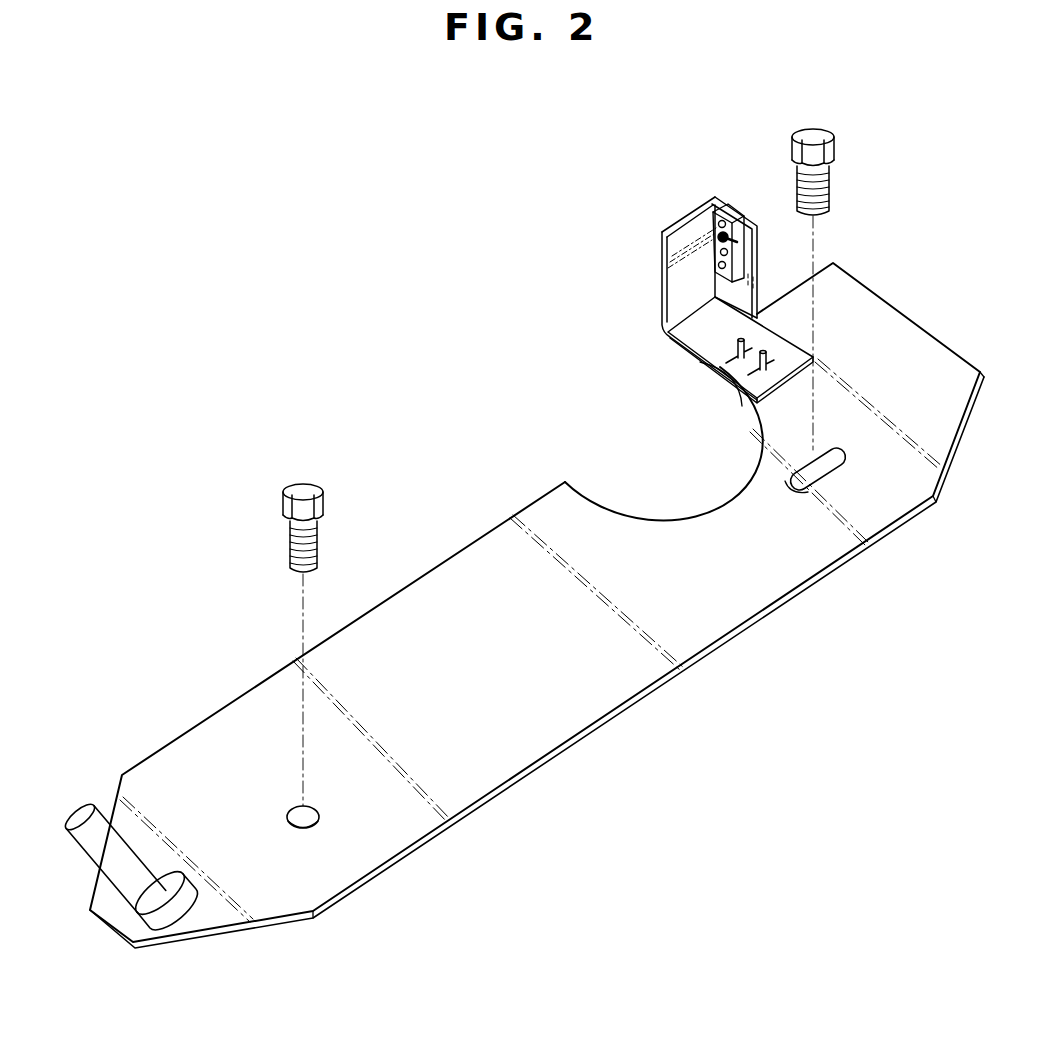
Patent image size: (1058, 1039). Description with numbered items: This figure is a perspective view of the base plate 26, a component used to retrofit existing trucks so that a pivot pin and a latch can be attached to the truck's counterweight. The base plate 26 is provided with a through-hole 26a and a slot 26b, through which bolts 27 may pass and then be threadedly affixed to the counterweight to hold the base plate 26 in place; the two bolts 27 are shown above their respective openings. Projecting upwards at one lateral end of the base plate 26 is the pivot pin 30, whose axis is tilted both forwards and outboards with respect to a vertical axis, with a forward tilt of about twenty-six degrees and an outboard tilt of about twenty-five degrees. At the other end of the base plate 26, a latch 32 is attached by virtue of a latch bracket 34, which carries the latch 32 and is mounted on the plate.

The base plate 26 is at (533, 497).
The through-hole 26a is at (320, 804).
The slot 26b is at (820, 485).
The bolts 27 is at (830, 153).
The pivot pin 30 is at (83, 808).
The latch 32 is at (717, 224).
The latch bracket 34 is at (694, 334).